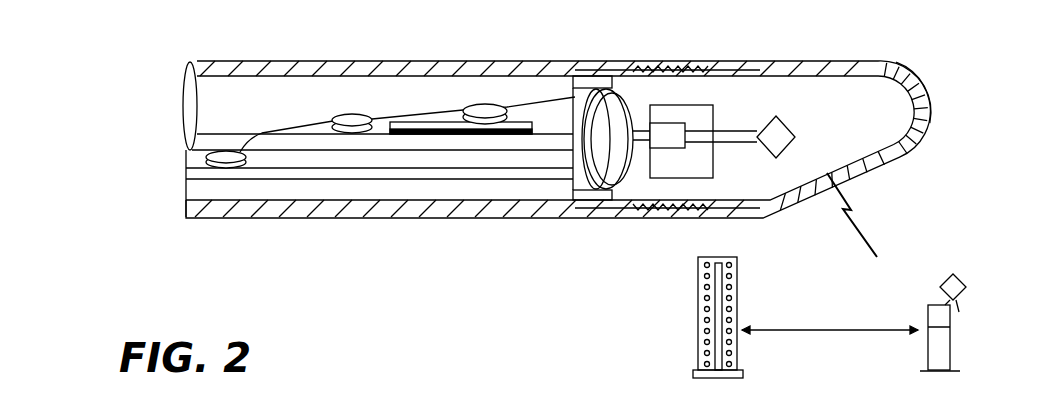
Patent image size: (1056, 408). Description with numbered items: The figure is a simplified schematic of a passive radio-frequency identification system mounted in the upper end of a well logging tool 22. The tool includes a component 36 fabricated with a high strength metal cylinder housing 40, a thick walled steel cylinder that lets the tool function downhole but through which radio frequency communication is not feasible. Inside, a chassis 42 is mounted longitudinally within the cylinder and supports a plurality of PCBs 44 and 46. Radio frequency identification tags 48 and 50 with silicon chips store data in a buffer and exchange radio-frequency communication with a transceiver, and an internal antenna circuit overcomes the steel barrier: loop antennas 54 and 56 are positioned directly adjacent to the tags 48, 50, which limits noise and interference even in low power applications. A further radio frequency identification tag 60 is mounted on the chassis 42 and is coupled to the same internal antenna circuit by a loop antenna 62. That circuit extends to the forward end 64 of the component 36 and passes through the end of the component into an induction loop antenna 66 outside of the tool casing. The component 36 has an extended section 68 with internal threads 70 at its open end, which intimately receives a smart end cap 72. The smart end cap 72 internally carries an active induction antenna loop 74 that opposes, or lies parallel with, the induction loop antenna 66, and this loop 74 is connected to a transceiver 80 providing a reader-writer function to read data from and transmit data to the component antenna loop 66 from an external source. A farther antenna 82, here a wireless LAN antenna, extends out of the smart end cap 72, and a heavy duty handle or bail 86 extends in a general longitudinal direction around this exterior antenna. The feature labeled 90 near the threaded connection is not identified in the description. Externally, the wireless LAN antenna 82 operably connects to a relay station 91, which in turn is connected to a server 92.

The well logging tool 22 is at (140, 229).
The component 36 is at (460, 219).
The high strength metal cylinder housing 40 is at (460, 61).
The chassis 42 is at (190, 152).
The PCB 44 is at (487, 180).
The PCB 46 is at (532, 125).
The RFID tag 48 is at (213, 163).
The RFID tag 50 is at (505, 110).
The loop antenna 54 is at (207, 158).
The loop antenna 56 is at (465, 107).
The RFID tag 60 is at (322, 128).
The loop antenna 62 is at (349, 114).
The forward end 64 is at (573, 61).
The induction loop antenna 66 is at (577, 205).
The extended section 68 is at (747, 58).
The internal threads 70 is at (663, 211).
The smart end cap 72 is at (772, 220).
The active induction antenna loop 74 is at (611, 200).
The transceiver 80 is at (695, 141).
The wireless LAN antenna 82 is at (792, 130).
The handle or bail 86 is at (926, 98).
The thread engagement 90 is at (690, 203).
The relay station 91 is at (952, 350).
The server 92 is at (698, 330).